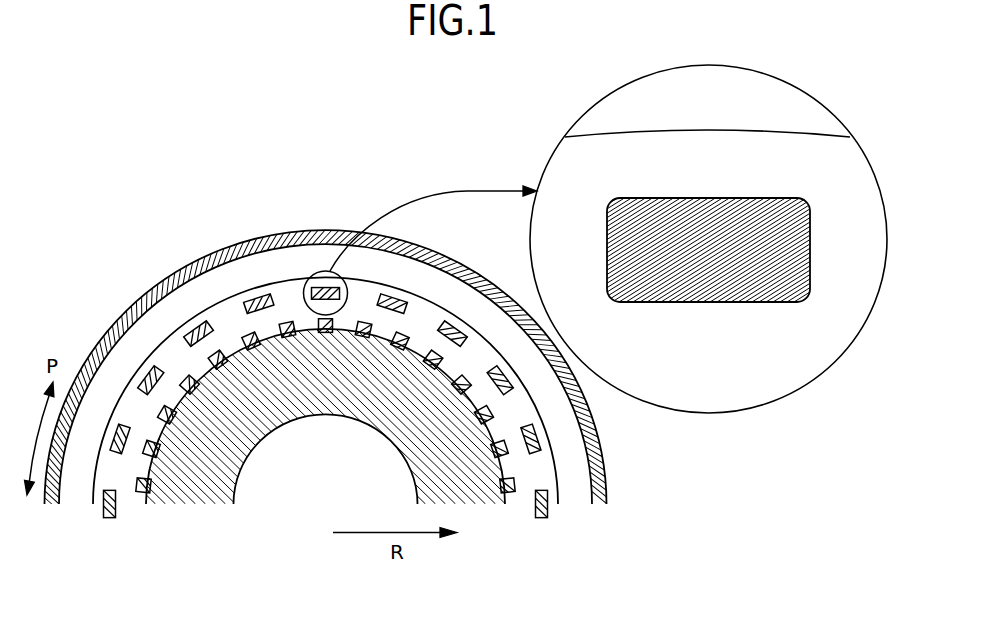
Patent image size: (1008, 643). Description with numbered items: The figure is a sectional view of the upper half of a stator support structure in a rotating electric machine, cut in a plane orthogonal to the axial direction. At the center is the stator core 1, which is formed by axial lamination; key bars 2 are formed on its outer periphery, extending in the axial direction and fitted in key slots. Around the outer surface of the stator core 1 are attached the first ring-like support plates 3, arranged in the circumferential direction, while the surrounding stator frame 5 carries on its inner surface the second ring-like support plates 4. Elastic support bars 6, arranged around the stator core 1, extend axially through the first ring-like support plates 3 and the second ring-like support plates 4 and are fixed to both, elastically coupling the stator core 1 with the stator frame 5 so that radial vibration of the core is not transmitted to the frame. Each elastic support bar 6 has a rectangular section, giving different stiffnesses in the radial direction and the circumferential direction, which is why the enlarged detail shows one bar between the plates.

The stator core 1 is at (405, 442).
The key bars 2 is at (245, 333).
The first ring-like support plates 3 is at (540, 474).
The second ring-like support plates 4 is at (567, 443).
The stator frame 5 is at (322, 231).
The elastic support bars 6 is at (395, 297).